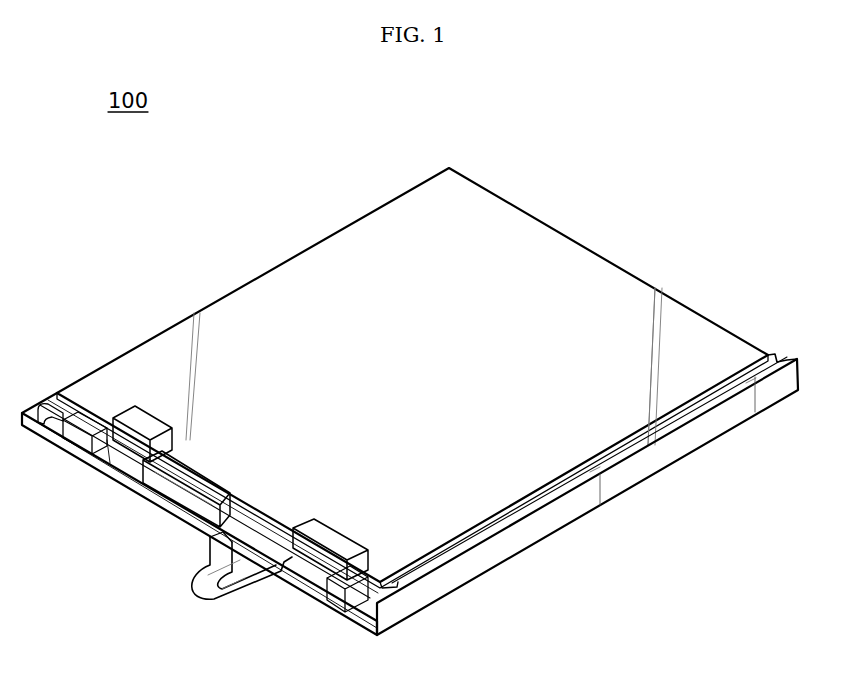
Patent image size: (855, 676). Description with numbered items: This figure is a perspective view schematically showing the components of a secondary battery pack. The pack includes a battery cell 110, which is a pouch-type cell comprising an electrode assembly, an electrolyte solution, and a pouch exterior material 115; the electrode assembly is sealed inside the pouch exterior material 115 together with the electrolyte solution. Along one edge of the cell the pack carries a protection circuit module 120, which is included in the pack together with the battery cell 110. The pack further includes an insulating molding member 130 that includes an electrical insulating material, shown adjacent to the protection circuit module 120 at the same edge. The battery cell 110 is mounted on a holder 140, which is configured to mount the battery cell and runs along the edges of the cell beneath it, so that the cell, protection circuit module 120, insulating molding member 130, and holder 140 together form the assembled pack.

The battery cell 110 is at (358, 240).
The pouch exterior material 115 is at (626, 278).
The protection circuit module 120 is at (120, 462).
The insulating molding member 130 is at (172, 495).
The holder 140 is at (504, 548).